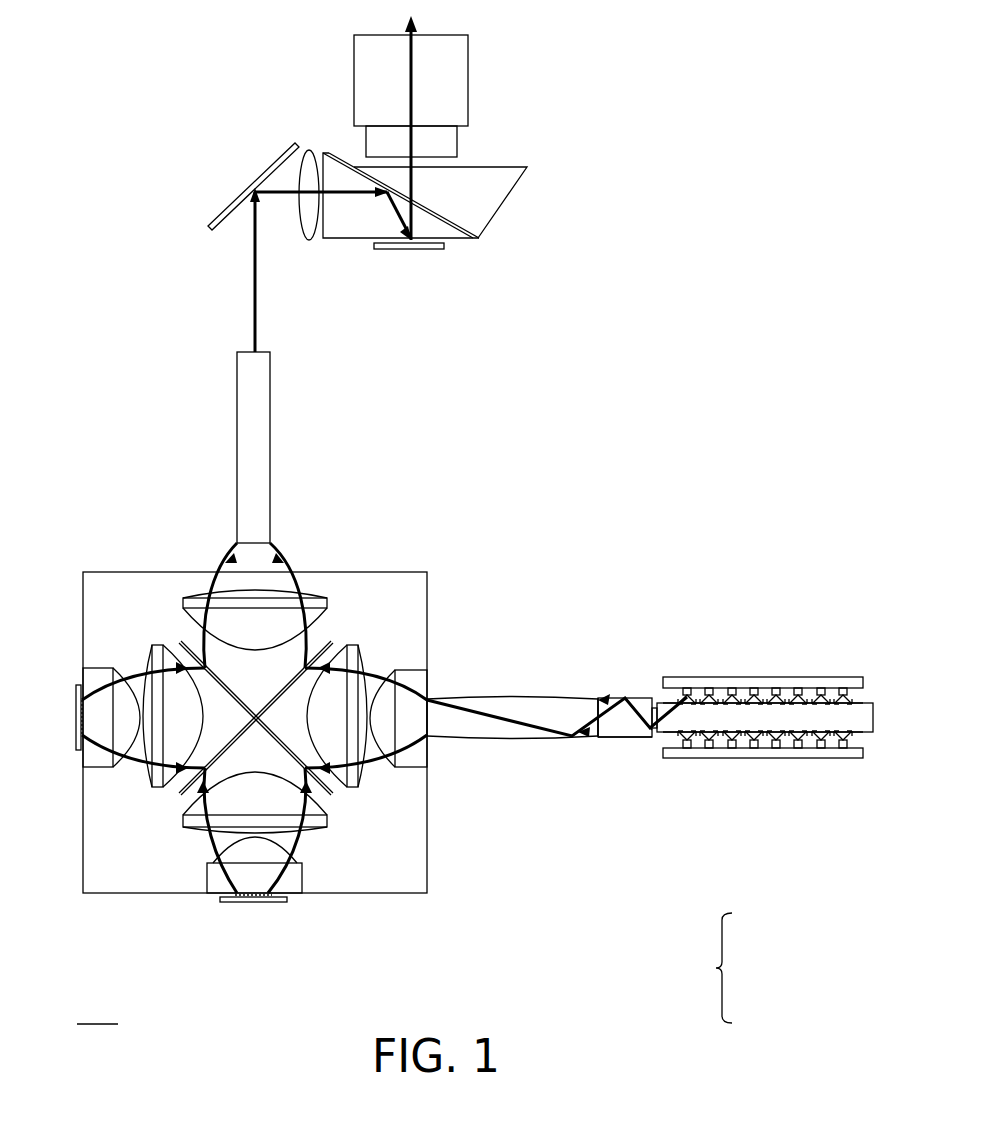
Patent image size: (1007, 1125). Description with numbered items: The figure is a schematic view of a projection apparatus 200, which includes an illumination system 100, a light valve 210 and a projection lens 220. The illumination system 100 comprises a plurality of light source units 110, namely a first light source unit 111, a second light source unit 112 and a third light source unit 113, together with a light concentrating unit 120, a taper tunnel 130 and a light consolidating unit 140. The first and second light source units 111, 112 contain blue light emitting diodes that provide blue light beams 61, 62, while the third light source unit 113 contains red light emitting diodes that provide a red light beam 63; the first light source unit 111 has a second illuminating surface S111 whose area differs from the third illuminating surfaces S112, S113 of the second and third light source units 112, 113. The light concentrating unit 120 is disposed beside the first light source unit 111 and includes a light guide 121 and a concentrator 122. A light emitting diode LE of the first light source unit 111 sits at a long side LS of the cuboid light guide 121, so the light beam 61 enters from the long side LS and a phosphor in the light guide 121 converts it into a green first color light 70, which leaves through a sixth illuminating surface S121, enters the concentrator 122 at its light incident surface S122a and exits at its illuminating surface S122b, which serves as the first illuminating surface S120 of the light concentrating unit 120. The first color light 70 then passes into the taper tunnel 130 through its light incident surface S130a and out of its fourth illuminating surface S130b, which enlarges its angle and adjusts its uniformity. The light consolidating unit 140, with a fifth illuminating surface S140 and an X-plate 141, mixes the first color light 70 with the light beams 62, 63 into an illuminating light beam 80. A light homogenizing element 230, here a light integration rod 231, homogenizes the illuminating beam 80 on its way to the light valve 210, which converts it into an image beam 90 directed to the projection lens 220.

The image beam 90 is at (410, 50).
The projection lens 220 is at (462, 98).
The light valve 210 is at (429, 250).
The illuminating light beam 80 is at (257, 342).
The light integration rod 231 is at (184, 375).
The light homogenizing element 230 is at (309, 220).
The light consolidating unit 140 is at (103, 558).
The fifth illuminating surface S140 is at (222, 561).
The X-plate 141 is at (368, 598).
The illumination system 100 is at (676, 526).
The third light source unit 113 is at (77, 702).
The third illuminating surface S113 is at (84, 730).
The red light beam 63 is at (137, 770).
The blue light beam 62 is at (296, 843).
The first color light 70 is at (493, 716).
The second light source unit 112 is at (237, 903).
The third illuminating surface S112 is at (274, 915).
The taper tunnel 130 is at (505, 710).
The fourth illuminating surface S130b is at (419, 702).
The light incident surface S130a is at (607, 694).
The light concentrating unit 120 is at (722, 618).
The concentrator 122 is at (640, 697).
The light guide 121 is at (742, 710).
The first illuminating surface S120 is at (595, 738).
The illuminating surface S122b is at (591, 772).
The sixth illuminating surface S121 is at (633, 740).
The light incident surface S122a is at (690, 735).
The blue light beam 61 is at (660, 735).
The second illuminating surface S111 is at (770, 703).
The long side LS is at (840, 677).
The first light source unit 111 is at (859, 694).
The light emitting diode LE is at (840, 750).
The light source units 110 is at (726, 969).
The projection apparatus 200 is at (97, 1008).